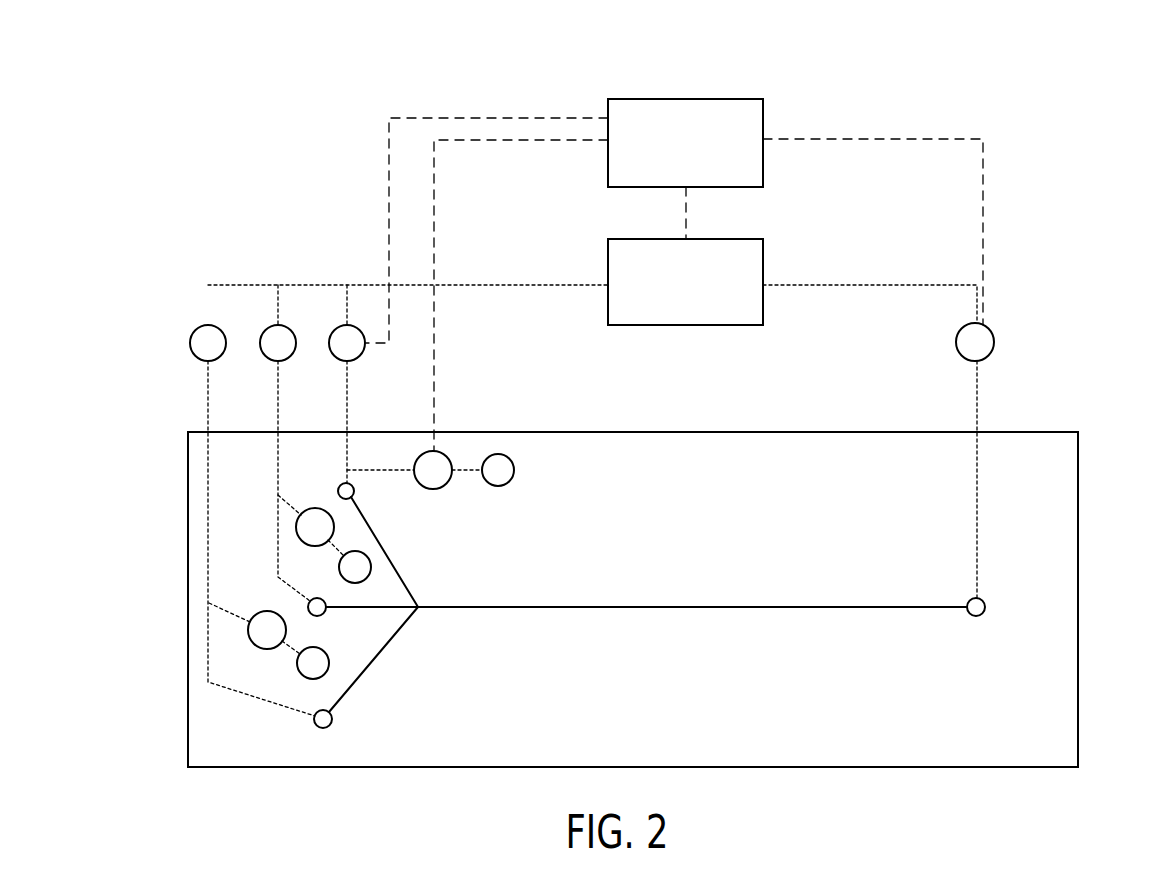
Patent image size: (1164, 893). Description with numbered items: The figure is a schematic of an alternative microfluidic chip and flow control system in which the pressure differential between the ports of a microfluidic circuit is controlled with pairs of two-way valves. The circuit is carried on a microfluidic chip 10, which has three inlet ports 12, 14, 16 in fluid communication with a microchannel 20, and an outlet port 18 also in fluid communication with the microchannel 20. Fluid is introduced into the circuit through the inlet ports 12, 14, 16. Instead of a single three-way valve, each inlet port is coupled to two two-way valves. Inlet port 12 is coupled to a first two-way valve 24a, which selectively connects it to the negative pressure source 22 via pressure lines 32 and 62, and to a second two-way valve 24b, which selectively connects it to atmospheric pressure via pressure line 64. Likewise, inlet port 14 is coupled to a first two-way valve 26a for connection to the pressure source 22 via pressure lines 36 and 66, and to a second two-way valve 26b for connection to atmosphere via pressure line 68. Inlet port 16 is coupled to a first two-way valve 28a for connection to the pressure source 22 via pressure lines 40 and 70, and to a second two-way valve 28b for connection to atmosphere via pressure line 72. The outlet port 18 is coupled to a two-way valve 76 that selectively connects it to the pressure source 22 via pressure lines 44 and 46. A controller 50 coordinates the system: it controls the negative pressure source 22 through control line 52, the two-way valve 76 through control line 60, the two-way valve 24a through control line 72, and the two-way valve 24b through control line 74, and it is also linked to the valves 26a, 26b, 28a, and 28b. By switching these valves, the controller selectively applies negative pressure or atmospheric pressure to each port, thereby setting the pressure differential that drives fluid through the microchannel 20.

The microfluidic chip 10 is at (1078, 470).
The inlet port 12 is at (353, 494).
The inlet port 14 is at (325, 612).
The inlet port 16 is at (333, 718).
The outlet port 18 is at (977, 616).
The microchannel 20 is at (765, 603).
The negative pressure source 22 is at (763, 250).
The first two-way valve 24a is at (353, 361).
The second two-way valve 24b is at (446, 484).
The first two-way valve 26a is at (272, 361).
The second two-way valve 26b is at (320, 506).
The first two-way valve 28a is at (190, 346).
The second two-way valve 28b is at (253, 611).
The pressure line 32 is at (347, 300).
The pressure line 36 is at (278, 300).
The pressure line 40 is at (208, 298).
The pressure line 44 is at (905, 282).
The pressure line 46 is at (978, 508).
The controller 50 is at (763, 114).
The control line 52 is at (686, 218).
The control line 60 is at (938, 135).
The pressure line 62 is at (350, 459).
The pressure line 64 is at (393, 470).
The pressure line 66 is at (278, 517).
The pressure line 68 is at (287, 493).
The pressure line 70 is at (208, 470).
The pressure line / control line 72 is at (470, 116).
The control line 74 is at (490, 147).
The two-way valve 76 is at (994, 343).